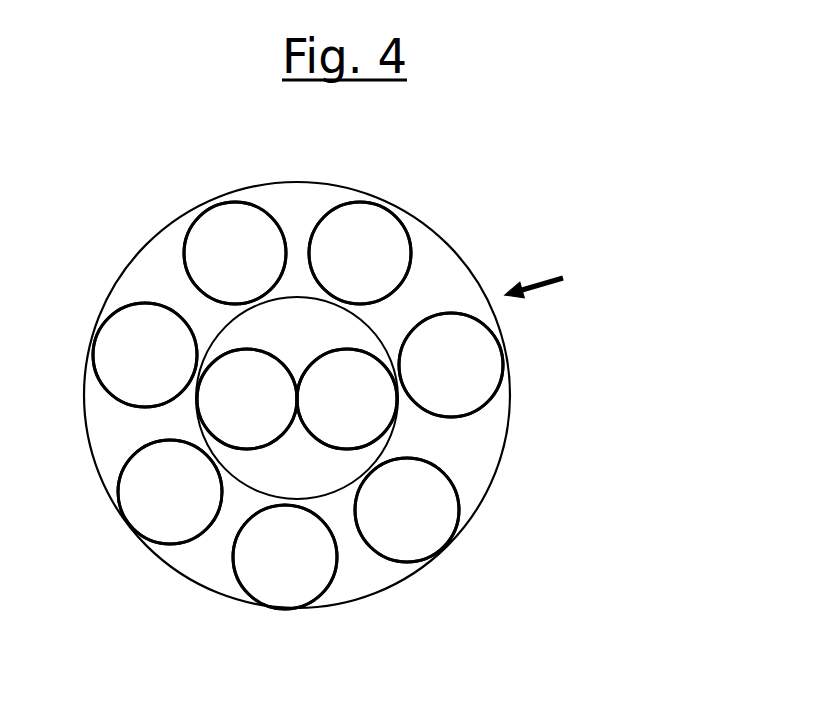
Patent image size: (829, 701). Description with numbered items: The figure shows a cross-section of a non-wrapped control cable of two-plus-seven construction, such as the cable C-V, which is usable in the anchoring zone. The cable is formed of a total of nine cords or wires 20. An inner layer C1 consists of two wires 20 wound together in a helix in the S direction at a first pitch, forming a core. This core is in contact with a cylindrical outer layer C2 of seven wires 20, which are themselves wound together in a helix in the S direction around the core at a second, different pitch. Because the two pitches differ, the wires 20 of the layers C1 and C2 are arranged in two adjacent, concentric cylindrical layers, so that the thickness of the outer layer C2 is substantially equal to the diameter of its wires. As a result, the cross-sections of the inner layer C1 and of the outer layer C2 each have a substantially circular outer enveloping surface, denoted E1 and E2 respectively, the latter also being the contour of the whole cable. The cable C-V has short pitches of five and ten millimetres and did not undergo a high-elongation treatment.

The wires 20 is at (352, 398).
The outer enveloping surface of the inner layer E1 is at (216, 327).
The outer enveloping surface of the outer layer E2 is at (393, 587).
The inner layer C1 is at (280, 468).
The outer layer C2 is at (450, 437).
The control cable C-V is at (568, 276).